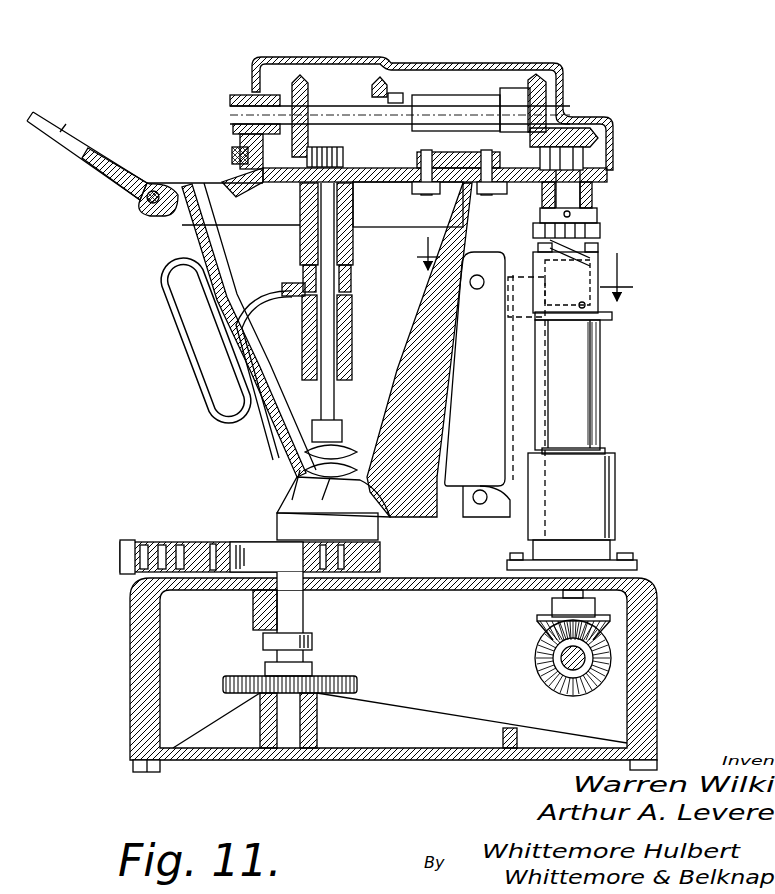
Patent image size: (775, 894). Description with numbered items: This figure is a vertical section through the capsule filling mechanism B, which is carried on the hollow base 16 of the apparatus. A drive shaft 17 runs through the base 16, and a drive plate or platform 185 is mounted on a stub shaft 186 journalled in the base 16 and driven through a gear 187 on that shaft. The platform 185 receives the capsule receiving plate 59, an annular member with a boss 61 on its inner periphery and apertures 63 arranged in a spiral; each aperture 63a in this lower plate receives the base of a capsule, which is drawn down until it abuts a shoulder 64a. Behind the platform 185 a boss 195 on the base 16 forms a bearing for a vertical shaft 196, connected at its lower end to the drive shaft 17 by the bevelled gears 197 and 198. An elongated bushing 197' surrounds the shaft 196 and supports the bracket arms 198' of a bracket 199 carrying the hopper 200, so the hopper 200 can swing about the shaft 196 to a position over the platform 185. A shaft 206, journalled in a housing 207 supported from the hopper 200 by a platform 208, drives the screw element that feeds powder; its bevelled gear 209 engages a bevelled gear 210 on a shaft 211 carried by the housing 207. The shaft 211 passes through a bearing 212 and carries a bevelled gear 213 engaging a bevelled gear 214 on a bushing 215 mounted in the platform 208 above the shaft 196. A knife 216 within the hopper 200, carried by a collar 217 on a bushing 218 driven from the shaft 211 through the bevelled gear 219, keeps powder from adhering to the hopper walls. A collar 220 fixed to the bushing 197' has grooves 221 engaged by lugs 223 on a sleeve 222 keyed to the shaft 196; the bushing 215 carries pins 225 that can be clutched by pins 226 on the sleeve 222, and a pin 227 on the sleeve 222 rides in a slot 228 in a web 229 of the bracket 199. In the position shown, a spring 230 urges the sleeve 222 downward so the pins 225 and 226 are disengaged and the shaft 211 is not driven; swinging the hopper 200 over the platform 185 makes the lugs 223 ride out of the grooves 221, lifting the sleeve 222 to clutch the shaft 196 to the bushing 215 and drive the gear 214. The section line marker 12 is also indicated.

The section line 12 is at (521, 269).
The base 16 is at (132, 750).
The drive shaft 17 is at (592, 655).
The capsule receiving plate 59 is at (136, 543).
The boss 61 is at (215, 543).
The aperture 63 is at (158, 543).
The aperture 63a is at (178, 543).
The shoulder 64a is at (140, 575).
The drive plate or platform 185 is at (237, 591).
The stub shaft 186 is at (290, 620).
The gear 187 is at (338, 676).
The boss 195 is at (583, 553).
The shaft 196 is at (650, 582).
The bevelled gear 197 is at (532, 658).
The elongated bushing 197' is at (614, 384).
The bevelled gear 198 is at (532, 606).
The bracket arm 198' is at (609, 430).
The bracket 199 is at (505, 372).
The hopper 200 is at (432, 352).
The shaft 206 is at (351, 303).
The housing 207 is at (353, 250).
The platform 208 is at (383, 183).
The bevelled gear 209 is at (320, 148).
The bevelled gear 210 is at (299, 74).
The shaft 211 is at (385, 110).
The bearing 212 is at (454, 99).
The bevelled gear 213 is at (531, 83).
The bevelled gear 214 is at (576, 128).
The bushing 215 is at (590, 213).
The knife 216 is at (257, 370).
The collar 217 is at (351, 281).
The bushing 218 is at (302, 246).
The bevelled gear 219 is at (230, 152).
The collar 220 is at (383, 77).
The groove 221 is at (598, 277).
The sleeve 222 is at (603, 253).
The lug 223 is at (570, 260).
The pin 225 is at (593, 247).
The pin 226 is at (600, 268).
The pin 227 is at (548, 351).
The slot 228 is at (574, 383).
The web 229 is at (560, 300).
The spring 230 is at (560, 233).
The capsule filling mechanism B is at (223, 332).